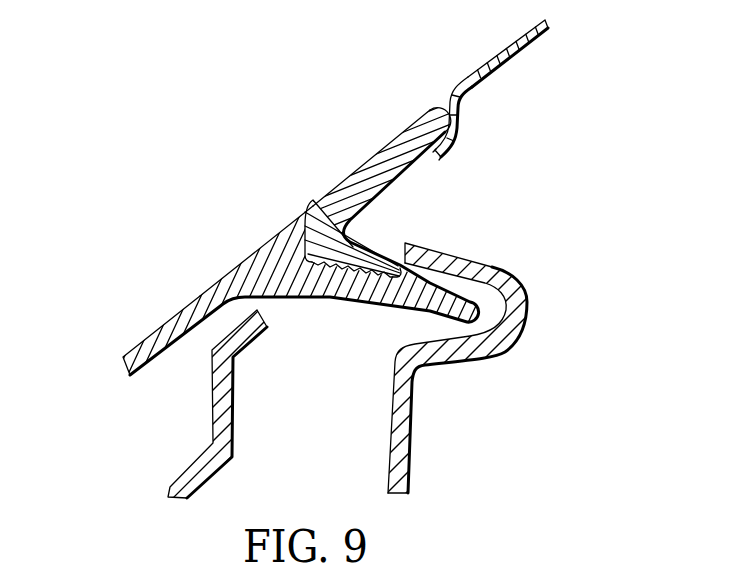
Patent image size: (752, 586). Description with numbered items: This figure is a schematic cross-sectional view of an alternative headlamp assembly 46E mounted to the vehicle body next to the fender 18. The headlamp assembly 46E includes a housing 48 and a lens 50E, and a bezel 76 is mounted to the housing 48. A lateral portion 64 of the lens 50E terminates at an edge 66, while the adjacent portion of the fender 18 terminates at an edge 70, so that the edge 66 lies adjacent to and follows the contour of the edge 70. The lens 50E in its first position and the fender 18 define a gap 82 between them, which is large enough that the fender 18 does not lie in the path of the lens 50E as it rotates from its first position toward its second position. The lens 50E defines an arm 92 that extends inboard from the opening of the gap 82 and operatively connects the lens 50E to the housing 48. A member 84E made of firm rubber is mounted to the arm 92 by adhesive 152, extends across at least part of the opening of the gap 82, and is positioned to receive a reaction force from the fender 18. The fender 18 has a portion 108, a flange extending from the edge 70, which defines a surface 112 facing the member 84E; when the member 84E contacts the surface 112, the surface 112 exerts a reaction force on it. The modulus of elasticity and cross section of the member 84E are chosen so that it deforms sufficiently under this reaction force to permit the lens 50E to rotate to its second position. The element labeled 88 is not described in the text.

The fender 18 is at (507, 60).
The headlamp assembly 46E is at (110, 249).
The housing 48 is at (530, 300).
The lens 50E is at (163, 328).
The lateral portion 64 is at (178, 306).
The edge 66 is at (315, 203).
The edge 70 is at (448, 104).
The bezel 76 is at (232, 397).
The gap 82 is at (433, 190).
The member 84E is at (363, 165).
The wall 88 is at (340, 180).
The arm 92 is at (380, 303).
The portion 108 is at (458, 144).
The surface 112 is at (431, 116).
The adhesive 152 is at (347, 273).